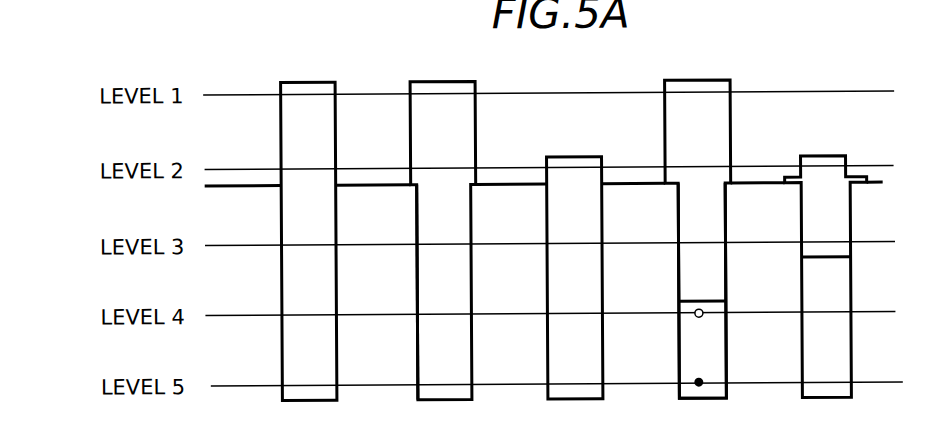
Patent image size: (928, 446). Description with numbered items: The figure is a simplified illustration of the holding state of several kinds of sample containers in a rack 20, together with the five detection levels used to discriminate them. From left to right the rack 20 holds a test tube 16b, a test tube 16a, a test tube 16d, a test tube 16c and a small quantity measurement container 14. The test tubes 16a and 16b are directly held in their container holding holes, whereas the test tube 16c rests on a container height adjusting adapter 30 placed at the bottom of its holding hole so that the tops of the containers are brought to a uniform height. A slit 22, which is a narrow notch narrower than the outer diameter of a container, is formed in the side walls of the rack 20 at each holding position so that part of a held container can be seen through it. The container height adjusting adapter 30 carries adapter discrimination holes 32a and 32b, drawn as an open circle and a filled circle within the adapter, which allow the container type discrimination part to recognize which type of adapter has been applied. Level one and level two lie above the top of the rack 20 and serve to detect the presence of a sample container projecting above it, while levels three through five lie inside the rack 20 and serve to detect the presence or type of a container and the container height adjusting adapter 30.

The small quantity measurement container 14 is at (828, 155).
The test tube 16a is at (453, 80).
The test tube 16b is at (306, 80).
The test tube 16c is at (701, 78).
The test tube 16d is at (580, 157).
The rack 20 is at (380, 183).
The slit 22 is at (417, 266).
The container height adjusting adapter 30 is at (688, 349).
The adapter discrimination hole 32a is at (704, 316).
The adapter discrimination hole 32b is at (698, 388).